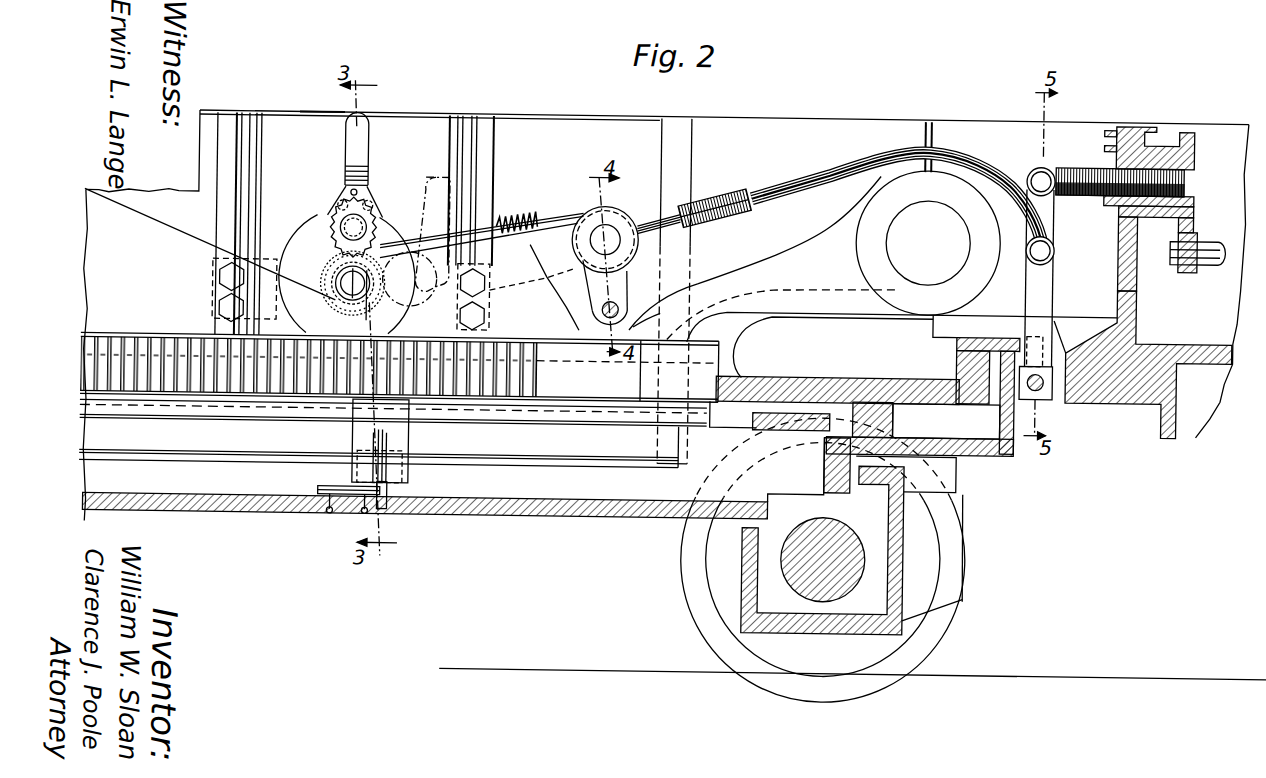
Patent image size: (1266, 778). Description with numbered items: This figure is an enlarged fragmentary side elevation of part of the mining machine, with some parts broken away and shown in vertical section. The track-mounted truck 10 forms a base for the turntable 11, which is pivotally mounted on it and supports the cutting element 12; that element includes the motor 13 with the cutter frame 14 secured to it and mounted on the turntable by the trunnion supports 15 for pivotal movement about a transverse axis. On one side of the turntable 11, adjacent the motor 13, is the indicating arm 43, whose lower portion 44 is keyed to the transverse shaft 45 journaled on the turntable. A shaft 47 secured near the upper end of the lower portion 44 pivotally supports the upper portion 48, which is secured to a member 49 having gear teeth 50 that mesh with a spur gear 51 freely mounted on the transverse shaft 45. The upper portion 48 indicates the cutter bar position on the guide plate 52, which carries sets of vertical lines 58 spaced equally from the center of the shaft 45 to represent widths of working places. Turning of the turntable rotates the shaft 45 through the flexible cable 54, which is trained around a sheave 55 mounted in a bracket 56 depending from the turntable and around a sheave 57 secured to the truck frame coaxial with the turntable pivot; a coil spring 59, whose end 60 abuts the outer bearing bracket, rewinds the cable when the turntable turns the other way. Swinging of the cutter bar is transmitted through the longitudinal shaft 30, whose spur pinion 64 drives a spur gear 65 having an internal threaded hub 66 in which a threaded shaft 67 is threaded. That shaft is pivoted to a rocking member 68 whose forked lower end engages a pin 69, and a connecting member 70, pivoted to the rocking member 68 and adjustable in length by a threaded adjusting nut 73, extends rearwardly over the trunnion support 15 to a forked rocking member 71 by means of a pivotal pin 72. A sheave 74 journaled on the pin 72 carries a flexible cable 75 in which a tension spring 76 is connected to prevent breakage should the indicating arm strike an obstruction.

The track-mounted truck 10 is at (548, 512).
The turntable 11 is at (981, 393).
The cutting element 12 is at (905, 110).
The motor 13 is at (578, 112).
The cutter frame 14 is at (1165, 112).
The trunnion supports 15 is at (985, 276).
The longitudinal shaft 30 is at (1214, 231).
The indicating arm 43 is at (372, 129).
The lower portion of indicating arm 44 is at (335, 248).
The transverse shaft 45 is at (357, 293).
The shaft 47 is at (329, 214).
The upper portion of indicating arm 48 is at (346, 135).
The member 49 is at (352, 190).
The gear teeth 50 is at (332, 231).
The spur gear 51 is at (338, 283).
The guide plate 52 is at (331, 109).
The flexible cable 54 is at (388, 430).
The sheave 55 is at (392, 491).
The bracket 56 is at (415, 471).
The sheave 57 is at (331, 484).
The vertical lines 58 is at (244, 110).
The coil spring 59 is at (345, 285).
The end of coil spring 60 is at (372, 310).
The spur pinion 64 is at (1189, 259).
The spur gear 65 is at (1196, 142).
The threaded hub 66 is at (1117, 190).
The threaded shaft 67 is at (1097, 149).
The rocking member 68 is at (1057, 281).
The pin 69 is at (1040, 391).
The connecting member 70 is at (848, 161).
The forked rocking member 71 is at (626, 274).
The pivotal pin 72 is at (615, 230).
The threaded adjusting nut 73 is at (735, 184).
The sheave 74 is at (615, 200).
The flexible cable 75 is at (549, 213).
The tension spring 76 is at (535, 210).